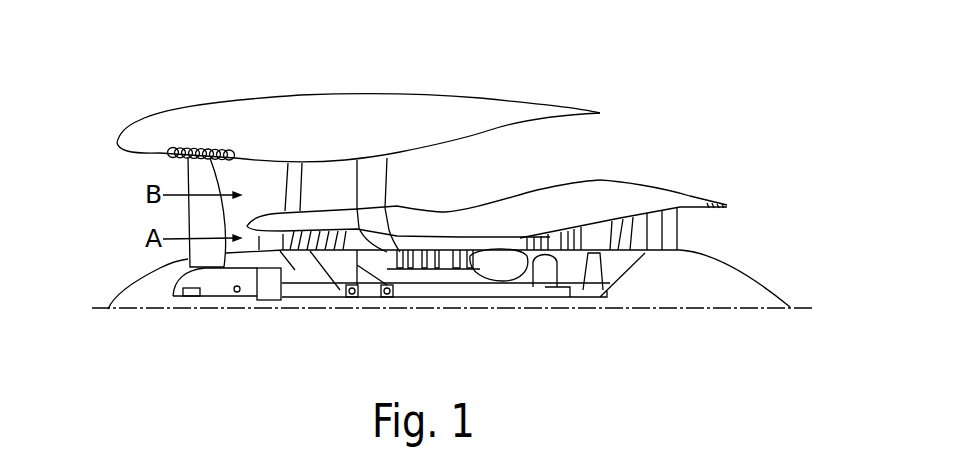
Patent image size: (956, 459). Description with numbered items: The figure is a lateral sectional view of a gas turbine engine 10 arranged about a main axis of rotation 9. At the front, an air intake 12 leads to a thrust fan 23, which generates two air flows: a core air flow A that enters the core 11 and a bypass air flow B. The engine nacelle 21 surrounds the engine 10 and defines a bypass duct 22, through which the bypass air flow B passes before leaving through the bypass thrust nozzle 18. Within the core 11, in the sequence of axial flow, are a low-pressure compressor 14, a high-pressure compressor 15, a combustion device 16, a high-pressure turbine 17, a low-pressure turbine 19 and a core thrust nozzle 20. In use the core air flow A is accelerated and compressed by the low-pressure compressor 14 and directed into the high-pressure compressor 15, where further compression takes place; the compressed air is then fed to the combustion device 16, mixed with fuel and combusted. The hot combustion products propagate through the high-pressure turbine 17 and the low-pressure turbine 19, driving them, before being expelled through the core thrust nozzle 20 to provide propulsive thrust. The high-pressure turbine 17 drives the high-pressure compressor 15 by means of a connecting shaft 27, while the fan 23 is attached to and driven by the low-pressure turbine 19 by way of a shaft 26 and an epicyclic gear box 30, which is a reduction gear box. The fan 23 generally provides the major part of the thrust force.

The main axis of rotation 9 is at (701, 309).
The gas turbine engine 10 is at (166, 113).
The core 11 is at (508, 228).
The air intake 12 is at (128, 173).
The low-pressure compressor 14 is at (323, 237).
The high-pressure compressor 15 is at (440, 243).
The combustion device 16 is at (497, 258).
The high-pressure turbine 17 is at (550, 235).
The bypass thrust nozzle 18 is at (682, 108).
The low-pressure turbine 19 is at (655, 242).
The core thrust nozzle 20 is at (729, 237).
The engine nacelle 21 is at (371, 107).
The bypass duct 22 is at (582, 148).
The thrust fan 23 is at (190, 224).
The shaft 26 is at (410, 298).
The connecting shaft 27 is at (463, 297).
The epicyclic gear box 30 is at (268, 293).